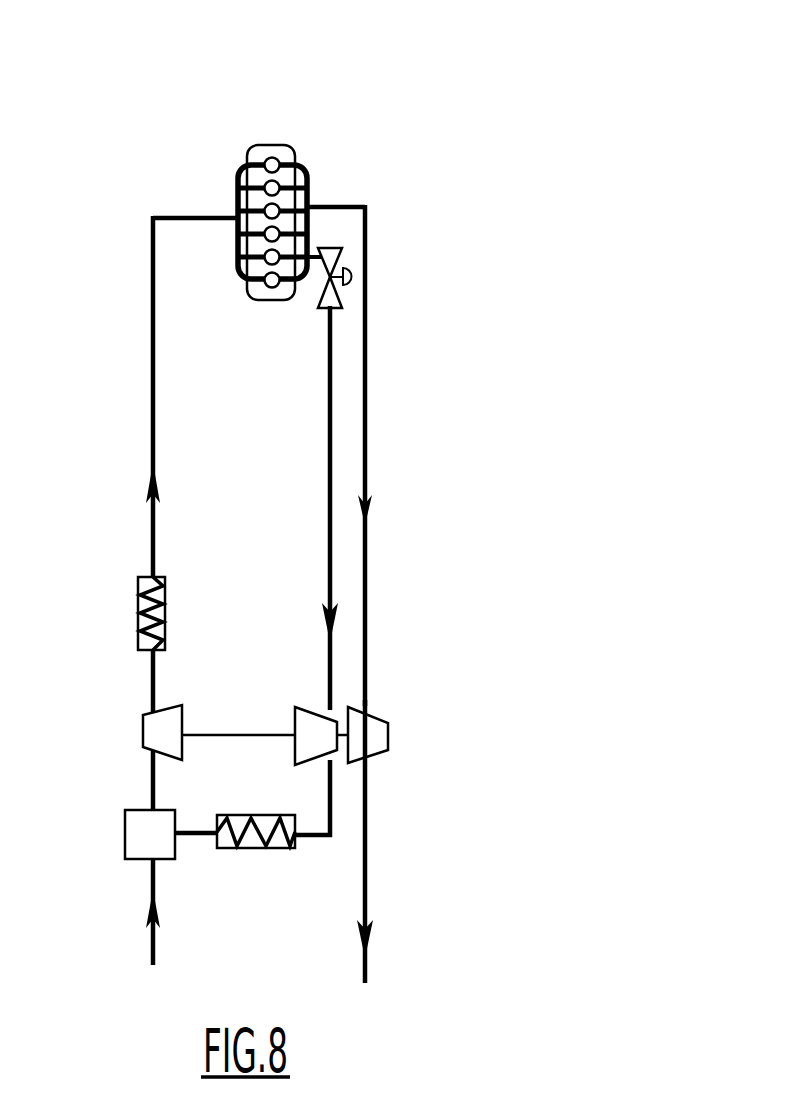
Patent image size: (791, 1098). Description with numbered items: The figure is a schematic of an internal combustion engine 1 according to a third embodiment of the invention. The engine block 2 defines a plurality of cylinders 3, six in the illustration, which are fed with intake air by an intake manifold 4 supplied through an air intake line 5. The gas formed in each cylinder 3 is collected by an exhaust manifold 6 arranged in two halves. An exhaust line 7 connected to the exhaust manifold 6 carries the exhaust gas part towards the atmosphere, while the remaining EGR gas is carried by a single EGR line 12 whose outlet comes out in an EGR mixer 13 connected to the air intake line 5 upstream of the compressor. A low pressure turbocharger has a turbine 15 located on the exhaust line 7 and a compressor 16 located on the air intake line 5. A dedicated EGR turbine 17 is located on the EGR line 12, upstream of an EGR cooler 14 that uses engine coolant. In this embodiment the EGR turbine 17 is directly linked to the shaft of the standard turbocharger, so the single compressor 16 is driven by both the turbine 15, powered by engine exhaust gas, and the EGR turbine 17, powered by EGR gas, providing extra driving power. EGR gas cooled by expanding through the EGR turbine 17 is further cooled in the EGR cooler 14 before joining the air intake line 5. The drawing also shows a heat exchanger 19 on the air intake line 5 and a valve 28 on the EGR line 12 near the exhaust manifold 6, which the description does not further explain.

The internal combustion engine 1 is at (222, 136).
The engine block 2 is at (275, 145).
The cylinders 3 is at (272, 166).
The intake manifold 4 is at (234, 180).
The air intake line 5 is at (148, 953).
The exhaust manifold 6 is at (310, 196).
The exhaust line 7 is at (367, 910).
The EGR line 12 is at (332, 798).
The EGR mixer 13 is at (140, 842).
The EGR cooler 14 is at (273, 850).
The turbine 15 is at (377, 735).
The compressor 16 is at (158, 737).
The EGR turbine 17 is at (308, 708).
The heat exchanger 19 is at (138, 623).
The valve 28 is at (340, 292).